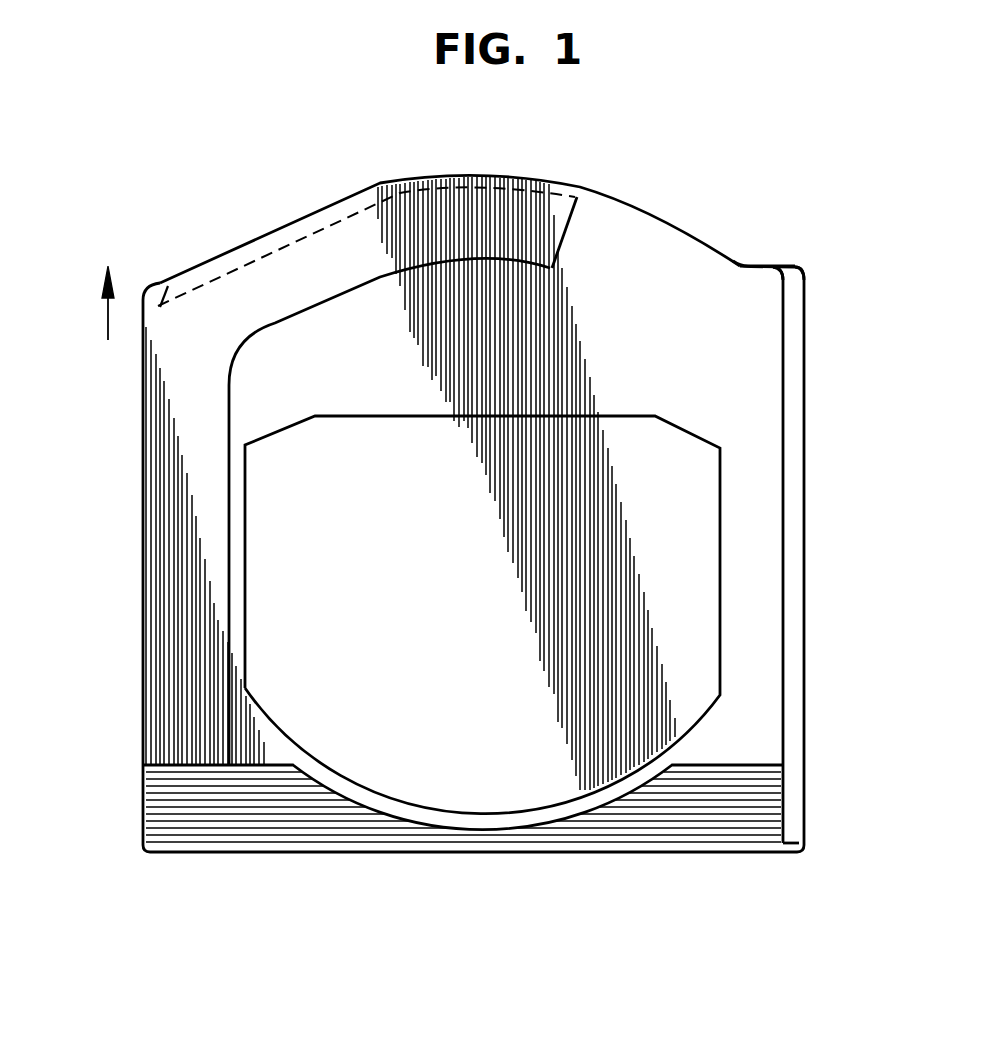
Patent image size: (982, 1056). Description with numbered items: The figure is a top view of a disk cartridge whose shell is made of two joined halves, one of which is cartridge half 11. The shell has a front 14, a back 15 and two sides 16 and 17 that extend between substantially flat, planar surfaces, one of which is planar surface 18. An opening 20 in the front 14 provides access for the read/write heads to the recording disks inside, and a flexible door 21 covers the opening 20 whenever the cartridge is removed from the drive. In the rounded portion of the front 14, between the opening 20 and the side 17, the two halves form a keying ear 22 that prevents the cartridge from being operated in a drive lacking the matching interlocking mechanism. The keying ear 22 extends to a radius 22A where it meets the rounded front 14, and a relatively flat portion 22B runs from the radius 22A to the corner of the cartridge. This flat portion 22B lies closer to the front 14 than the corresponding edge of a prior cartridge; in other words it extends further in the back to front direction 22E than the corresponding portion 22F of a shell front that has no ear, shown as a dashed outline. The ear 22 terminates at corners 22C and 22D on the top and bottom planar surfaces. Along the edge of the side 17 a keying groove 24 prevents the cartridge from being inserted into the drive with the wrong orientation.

The cartridge half 11 is at (757, 338).
The front 14 is at (600, 196).
The back 15 is at (175, 855).
The side 16 is at (143, 438).
The side 17 is at (806, 608).
The planar surface 18 is at (763, 448).
The opening 20 is at (453, 172).
The flexible door 21 is at (163, 267).
The keying ear 22 is at (800, 262).
The radius 22A is at (748, 262).
The flat portion 22B is at (778, 266).
The corner 22C is at (808, 272).
The corner 22D is at (777, 272).
The back to front direction 22E is at (107, 315).
The corresponding portion of the front 22F is at (186, 270).
The keying groove 24 is at (793, 700).